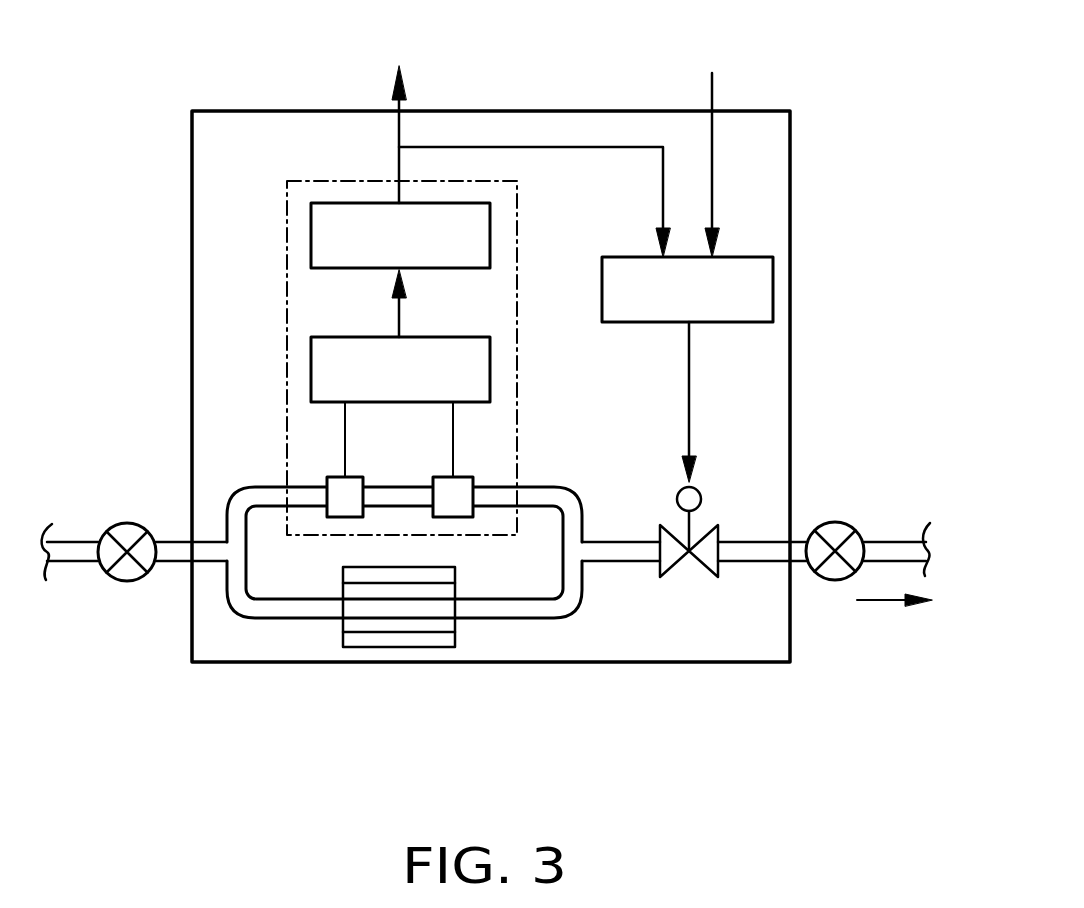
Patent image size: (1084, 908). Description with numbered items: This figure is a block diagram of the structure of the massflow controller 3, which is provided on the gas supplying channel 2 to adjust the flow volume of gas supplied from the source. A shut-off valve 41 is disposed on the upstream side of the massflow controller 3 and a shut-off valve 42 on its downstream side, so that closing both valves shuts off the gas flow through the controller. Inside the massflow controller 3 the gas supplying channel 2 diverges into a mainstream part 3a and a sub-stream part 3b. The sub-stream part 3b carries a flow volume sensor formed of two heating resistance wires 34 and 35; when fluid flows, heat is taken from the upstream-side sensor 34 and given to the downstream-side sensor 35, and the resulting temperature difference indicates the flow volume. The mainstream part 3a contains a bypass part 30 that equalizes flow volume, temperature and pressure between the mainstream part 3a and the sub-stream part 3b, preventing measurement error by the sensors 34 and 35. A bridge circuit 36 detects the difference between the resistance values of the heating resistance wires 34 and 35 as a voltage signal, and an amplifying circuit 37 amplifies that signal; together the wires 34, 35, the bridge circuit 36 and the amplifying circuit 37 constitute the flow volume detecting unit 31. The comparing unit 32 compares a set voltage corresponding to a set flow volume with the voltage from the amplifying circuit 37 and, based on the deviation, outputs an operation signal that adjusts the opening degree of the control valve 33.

The gas supplying channel 2 is at (77, 542).
The massflow controller 3 is at (753, 95).
The mainstream part 3a is at (268, 620).
The sub-stream part 3b is at (258, 488).
The bypass part 30 is at (393, 648).
The flow volume detecting unit 31 is at (348, 180).
The comparing unit 32 is at (602, 278).
The control valve 33 is at (661, 526).
The heating resistance wire 34 is at (327, 478).
The heating resistance wire 35 is at (471, 478).
The bridge circuit 36 is at (311, 362).
The amplifying circuit 37 is at (311, 234).
The shut-off valve 41 is at (118, 583).
The shut-off valve 42 is at (827, 578).